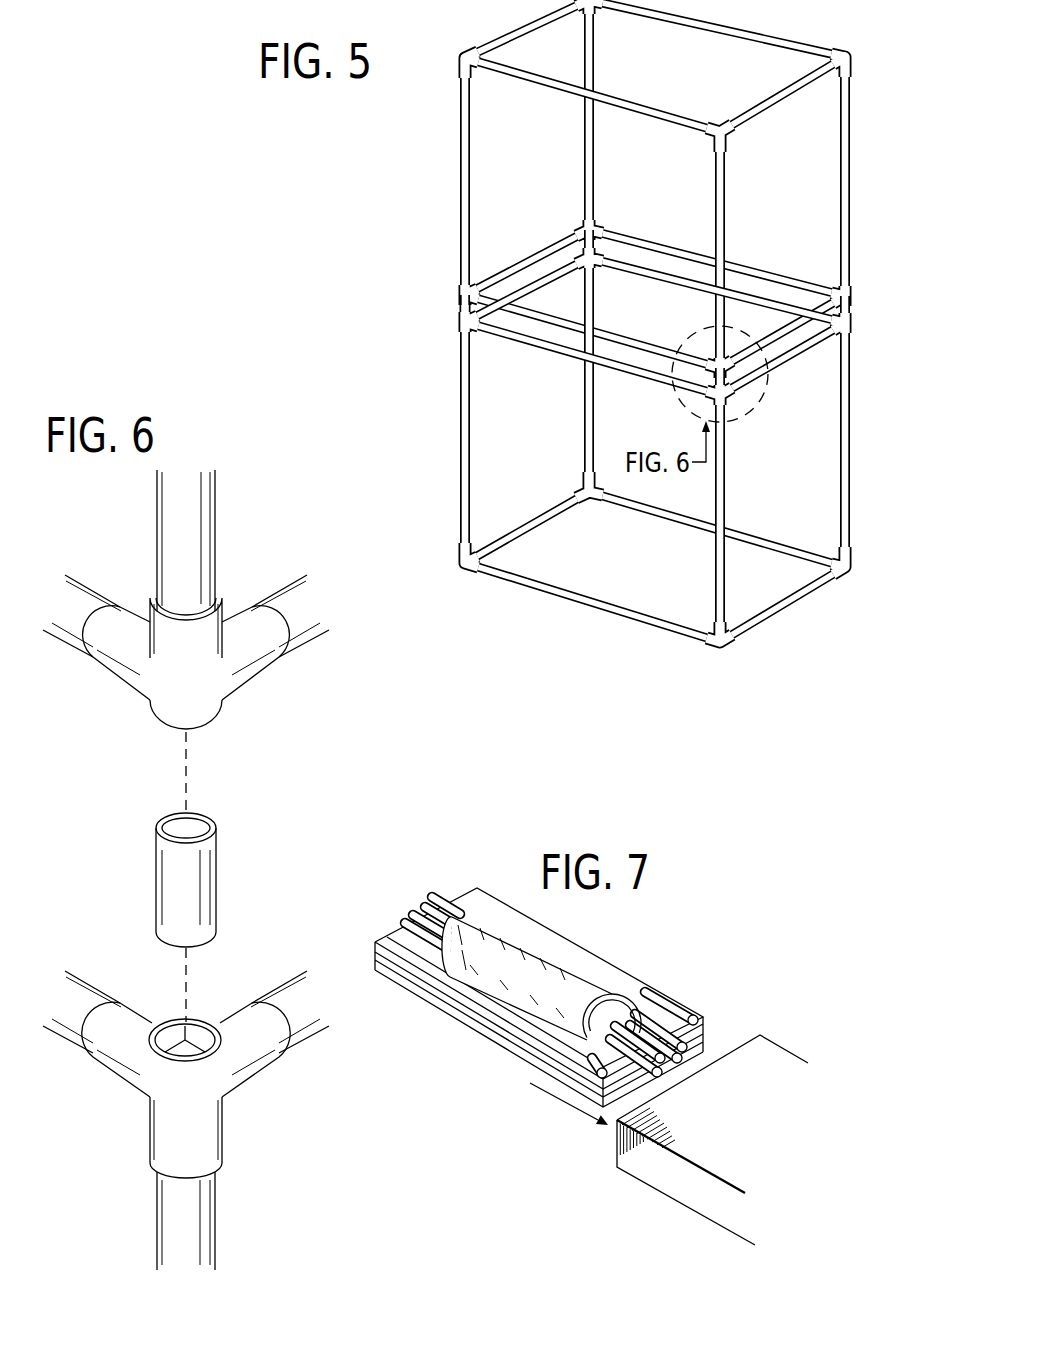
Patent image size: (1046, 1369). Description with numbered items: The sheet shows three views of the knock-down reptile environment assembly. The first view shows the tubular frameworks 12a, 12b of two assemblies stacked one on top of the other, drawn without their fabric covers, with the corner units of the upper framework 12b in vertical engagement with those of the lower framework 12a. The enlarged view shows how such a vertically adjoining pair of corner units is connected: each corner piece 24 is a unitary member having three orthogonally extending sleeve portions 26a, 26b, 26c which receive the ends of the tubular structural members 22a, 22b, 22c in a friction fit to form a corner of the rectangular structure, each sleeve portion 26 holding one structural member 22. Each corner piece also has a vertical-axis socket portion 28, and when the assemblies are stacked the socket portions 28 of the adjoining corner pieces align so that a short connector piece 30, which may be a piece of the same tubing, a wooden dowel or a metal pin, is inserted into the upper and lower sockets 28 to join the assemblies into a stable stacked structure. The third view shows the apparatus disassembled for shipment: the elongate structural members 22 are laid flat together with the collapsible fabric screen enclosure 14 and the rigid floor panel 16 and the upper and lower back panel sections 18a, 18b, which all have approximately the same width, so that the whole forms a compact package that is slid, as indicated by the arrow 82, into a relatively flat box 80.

In FIG. 5, the framework 12a is at (455, 408).
In FIG. 5, the framework 12b is at (455, 151).
In FIG. 7, the fabric screen enclosure 14 is at (557, 960).
In FIG. 7, the floor panel 16 is at (479, 995).
In FIG. 7, the upper panel section 18a is at (495, 1023).
In FIG. 7, the lower panel section 18b is at (503, 1041).
In FIG. 6, the tubular structural members 22 is at (65, 645).
In FIG. 7, the tubular structural members 22 is at (643, 1016).
In FIG. 6, the tubular structural member 22a is at (63, 1037).
In FIG. 6, the tubular structural member 22b is at (302, 1033).
In FIG. 6, the tubular structural member 22c is at (168, 1208).
In FIG. 6, the corner piece 24 is at (187, 1090).
In FIG. 6, the sleeve portion 26 is at (108, 672).
In FIG. 6, the sleeve portion 26a is at (103, 1060).
In FIG. 6, the sleeve portion 26b is at (260, 1073).
In FIG. 6, the sleeve portion 26c is at (159, 1145).
In FIG. 6, the vertical-axis socket portion 28 is at (172, 731).
In FIG. 5, the connector piece 30 is at (461, 311).
In FIG. 6, the connector piece 30 is at (172, 864).
In FIG. 7, the box 80 is at (733, 1133).
In FIG. 7, the insertion direction arrow 82 is at (562, 1102).